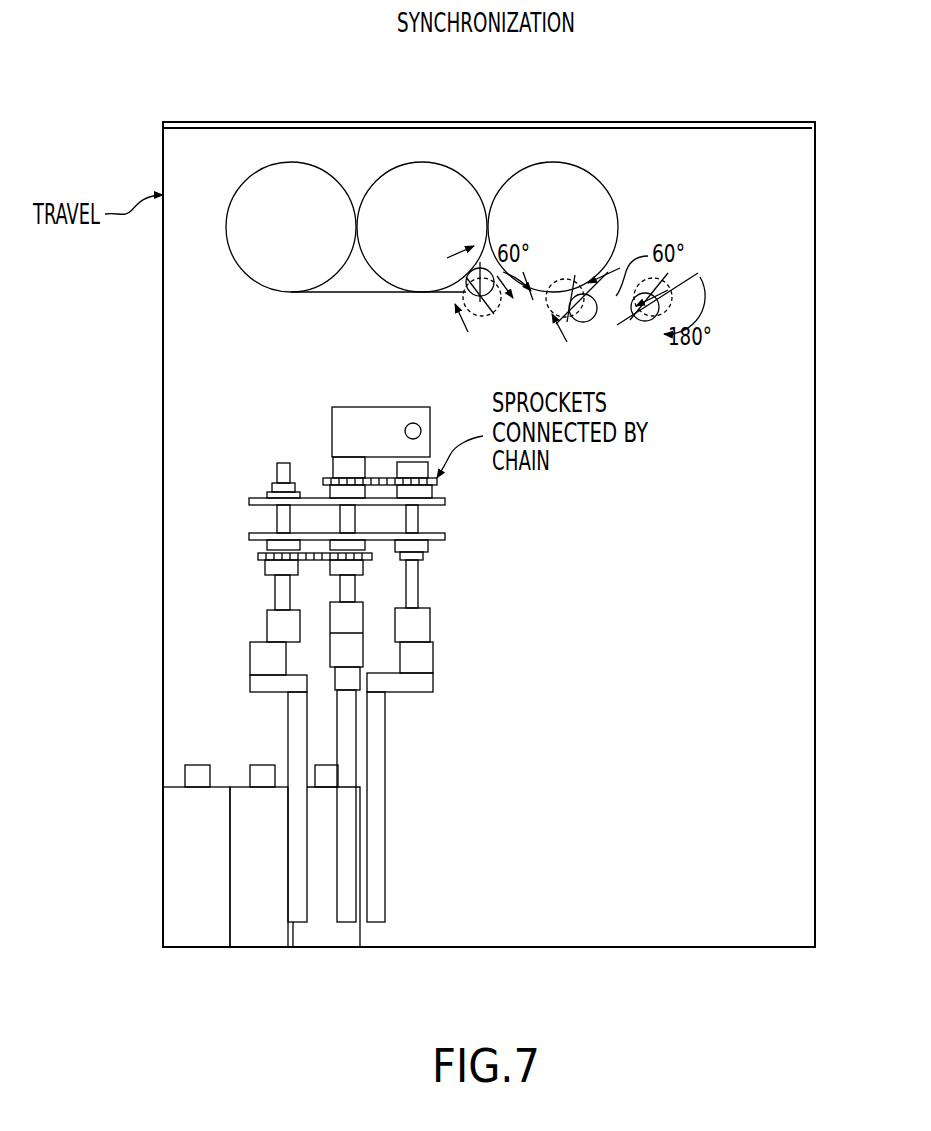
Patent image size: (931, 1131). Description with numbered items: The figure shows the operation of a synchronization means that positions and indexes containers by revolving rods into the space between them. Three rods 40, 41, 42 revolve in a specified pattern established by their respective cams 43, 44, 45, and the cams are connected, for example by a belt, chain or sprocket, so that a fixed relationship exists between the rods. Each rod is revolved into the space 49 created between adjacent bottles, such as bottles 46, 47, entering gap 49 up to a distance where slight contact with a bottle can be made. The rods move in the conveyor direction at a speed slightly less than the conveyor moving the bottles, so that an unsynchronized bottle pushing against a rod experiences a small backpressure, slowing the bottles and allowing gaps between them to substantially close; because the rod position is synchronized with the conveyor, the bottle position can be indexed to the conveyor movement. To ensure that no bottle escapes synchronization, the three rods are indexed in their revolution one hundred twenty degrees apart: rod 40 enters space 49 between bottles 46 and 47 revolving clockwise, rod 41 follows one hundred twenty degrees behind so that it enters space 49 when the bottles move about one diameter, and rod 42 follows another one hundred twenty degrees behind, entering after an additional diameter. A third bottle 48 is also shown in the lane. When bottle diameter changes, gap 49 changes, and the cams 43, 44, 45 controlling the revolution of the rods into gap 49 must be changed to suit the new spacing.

The rod 40 is at (286, 718).
The rod 41 is at (361, 757).
The rod 42 is at (388, 719).
The cam 43 is at (437, 650).
The cam 44 is at (370, 647).
The cam 45 is at (252, 640).
The bottle 46 is at (304, 241).
The bottle 47 is at (435, 241).
The roller / station 48 is at (566, 241).
The space 49 is at (355, 276).